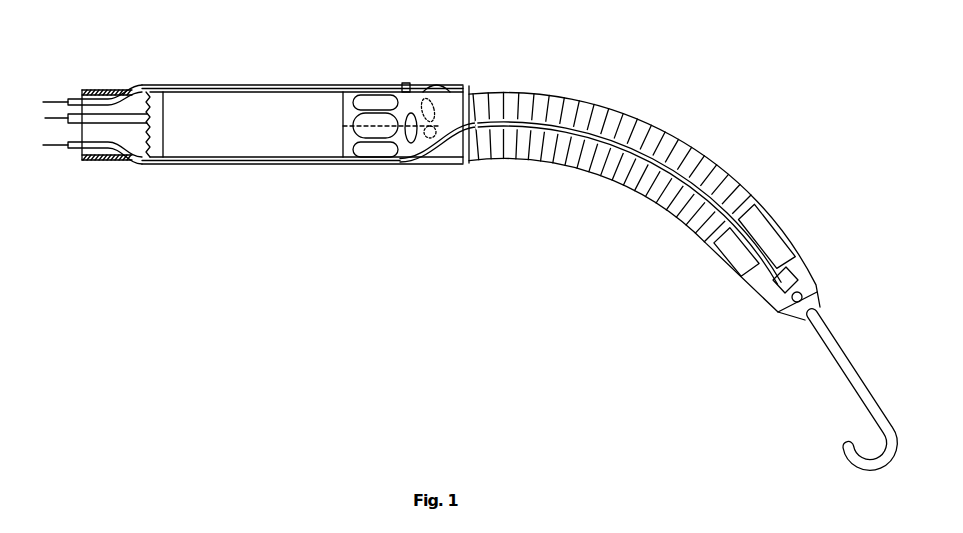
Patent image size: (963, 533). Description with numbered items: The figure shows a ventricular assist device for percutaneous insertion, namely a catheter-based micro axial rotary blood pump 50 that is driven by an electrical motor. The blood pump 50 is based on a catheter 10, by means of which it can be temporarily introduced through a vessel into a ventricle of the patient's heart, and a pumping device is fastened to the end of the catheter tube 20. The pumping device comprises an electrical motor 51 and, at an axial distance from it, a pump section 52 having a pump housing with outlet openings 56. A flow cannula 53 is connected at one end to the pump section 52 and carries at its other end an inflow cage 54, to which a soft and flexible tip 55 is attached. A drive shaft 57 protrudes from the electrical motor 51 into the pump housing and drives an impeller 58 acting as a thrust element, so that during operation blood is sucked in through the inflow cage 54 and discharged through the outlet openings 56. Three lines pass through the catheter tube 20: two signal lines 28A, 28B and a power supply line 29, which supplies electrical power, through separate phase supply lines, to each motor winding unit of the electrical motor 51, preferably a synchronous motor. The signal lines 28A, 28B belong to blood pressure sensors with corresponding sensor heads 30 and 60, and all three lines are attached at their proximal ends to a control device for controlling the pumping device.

The catheter 10 is at (151, 50).
The catheter tube 20 is at (112, 90).
The signal line 28A is at (56, 149).
The signal line 28B is at (52, 100).
The power supply line 29 is at (94, 122).
The sensor head 30 is at (765, 290).
The micro axial rotary blood pump 50 is at (573, 27).
The electrical motor 51 is at (305, 124).
The pump section 52 is at (413, 185).
The flow cannula 53 is at (613, 120).
The inflow cage 54 is at (763, 218).
The soft and flexible tip 55 is at (849, 373).
The outlet openings 56 is at (376, 154).
The drive shaft 57 is at (373, 126).
The impeller 58 is at (428, 140).
The sensor head 60 is at (399, 72).